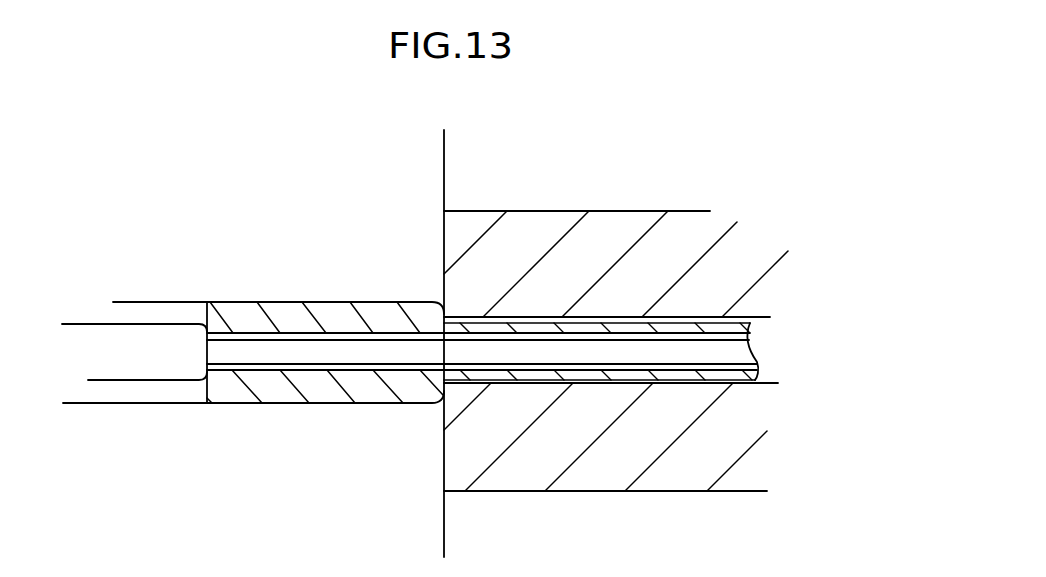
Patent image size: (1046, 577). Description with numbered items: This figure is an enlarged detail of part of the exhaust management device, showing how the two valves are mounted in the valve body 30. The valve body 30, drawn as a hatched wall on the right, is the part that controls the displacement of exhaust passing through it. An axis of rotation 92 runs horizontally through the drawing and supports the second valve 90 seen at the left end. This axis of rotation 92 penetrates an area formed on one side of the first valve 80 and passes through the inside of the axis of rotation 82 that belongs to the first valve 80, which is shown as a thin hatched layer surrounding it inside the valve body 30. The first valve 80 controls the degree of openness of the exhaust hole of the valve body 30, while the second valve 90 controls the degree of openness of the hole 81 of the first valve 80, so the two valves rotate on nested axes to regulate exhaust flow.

The valve body 30 is at (677, 463).
The first valve 80 is at (335, 388).
The hole of the first valve 81 is at (187, 390).
The axis of rotation of the first valve 82 is at (540, 377).
The second valve 90 is at (138, 365).
The axis of rotation 92 is at (307, 353).